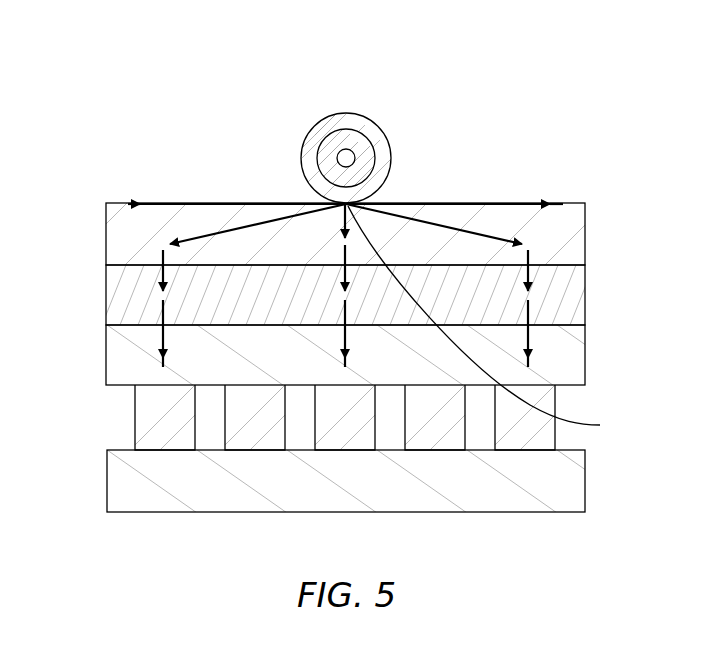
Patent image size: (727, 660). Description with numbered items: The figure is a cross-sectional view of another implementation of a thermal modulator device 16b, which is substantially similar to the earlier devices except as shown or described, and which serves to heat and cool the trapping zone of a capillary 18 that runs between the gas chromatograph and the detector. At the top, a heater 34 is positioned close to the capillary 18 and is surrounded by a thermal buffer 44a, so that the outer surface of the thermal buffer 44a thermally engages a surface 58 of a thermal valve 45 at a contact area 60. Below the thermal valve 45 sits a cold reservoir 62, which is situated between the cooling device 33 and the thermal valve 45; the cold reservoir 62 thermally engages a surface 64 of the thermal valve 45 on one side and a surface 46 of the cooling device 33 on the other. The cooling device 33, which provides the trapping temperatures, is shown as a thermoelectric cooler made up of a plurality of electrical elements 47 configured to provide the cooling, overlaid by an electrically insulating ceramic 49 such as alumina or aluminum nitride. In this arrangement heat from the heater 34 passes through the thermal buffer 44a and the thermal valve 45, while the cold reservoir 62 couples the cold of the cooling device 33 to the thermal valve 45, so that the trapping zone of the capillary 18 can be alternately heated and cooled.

The thermal modulator device 16b is at (98, 84).
The capillary 18 is at (350, 158).
The cooling device 33 is at (92, 328).
The heater 34 is at (345, 130).
The thermal buffer 44a is at (322, 116).
The thermal valve 45 is at (106, 222).
The surface of the cooling device 46 is at (490, 325).
The electrical elements 47 is at (255, 433).
The electrically insulating ceramic 49 is at (585, 343).
The surface of the thermal valve 58 is at (197, 203).
The contact area 60 is at (488, 322).
The cold reservoir 62 is at (106, 290).
The surface of the thermal valve 64 is at (474, 266).